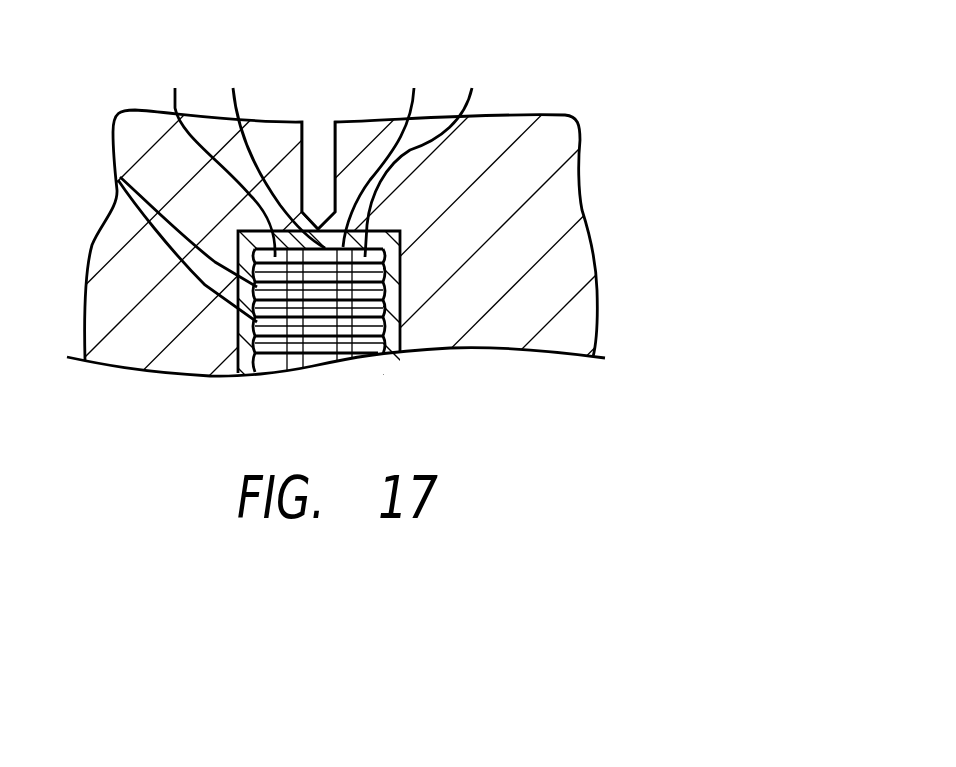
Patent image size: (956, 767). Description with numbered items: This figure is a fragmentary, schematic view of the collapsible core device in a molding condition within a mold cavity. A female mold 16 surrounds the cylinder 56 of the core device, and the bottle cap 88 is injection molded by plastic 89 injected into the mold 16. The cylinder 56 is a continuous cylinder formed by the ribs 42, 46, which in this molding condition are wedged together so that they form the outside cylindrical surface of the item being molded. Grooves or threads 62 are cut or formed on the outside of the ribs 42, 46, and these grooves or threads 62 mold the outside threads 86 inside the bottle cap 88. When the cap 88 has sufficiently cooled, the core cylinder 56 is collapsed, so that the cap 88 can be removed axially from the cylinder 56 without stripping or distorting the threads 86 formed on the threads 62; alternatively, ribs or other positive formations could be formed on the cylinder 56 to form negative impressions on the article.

The female mold part 16 is at (498, 130).
The ribs 42 is at (324, 152).
The ribs 46 is at (323, 157).
The cylinder 56 is at (313, 378).
The grooves or threads 62 is at (364, 305).
The outside threads 86 is at (120, 177).
The bottle cap 88 is at (408, 230).
The plastic 89 is at (318, 176).